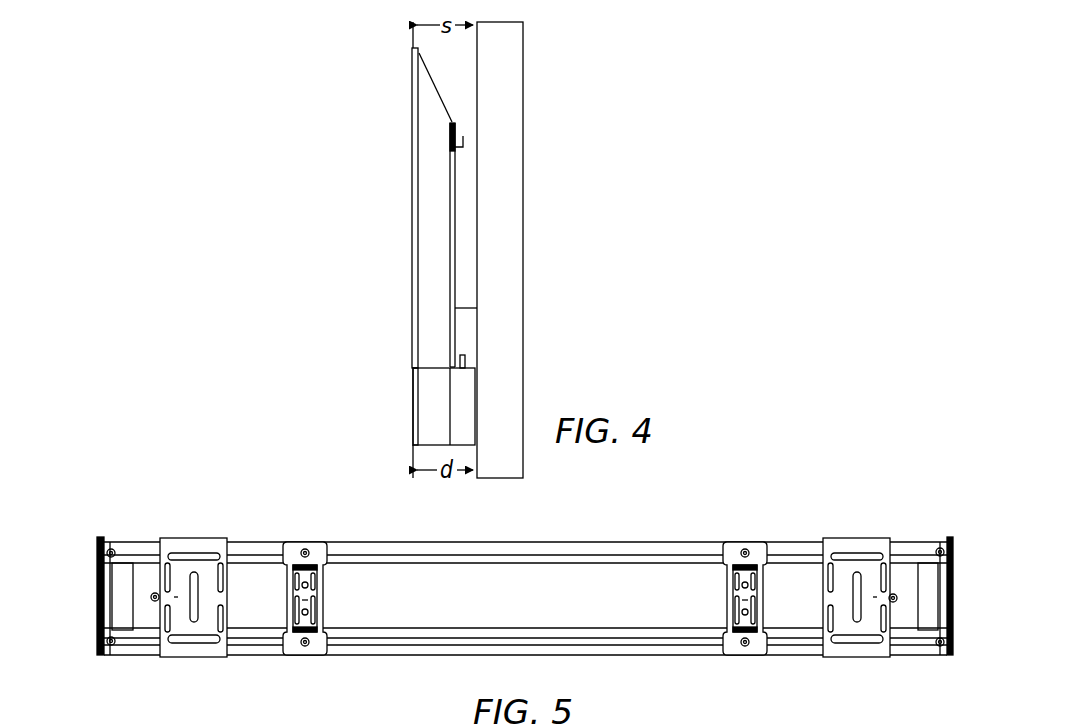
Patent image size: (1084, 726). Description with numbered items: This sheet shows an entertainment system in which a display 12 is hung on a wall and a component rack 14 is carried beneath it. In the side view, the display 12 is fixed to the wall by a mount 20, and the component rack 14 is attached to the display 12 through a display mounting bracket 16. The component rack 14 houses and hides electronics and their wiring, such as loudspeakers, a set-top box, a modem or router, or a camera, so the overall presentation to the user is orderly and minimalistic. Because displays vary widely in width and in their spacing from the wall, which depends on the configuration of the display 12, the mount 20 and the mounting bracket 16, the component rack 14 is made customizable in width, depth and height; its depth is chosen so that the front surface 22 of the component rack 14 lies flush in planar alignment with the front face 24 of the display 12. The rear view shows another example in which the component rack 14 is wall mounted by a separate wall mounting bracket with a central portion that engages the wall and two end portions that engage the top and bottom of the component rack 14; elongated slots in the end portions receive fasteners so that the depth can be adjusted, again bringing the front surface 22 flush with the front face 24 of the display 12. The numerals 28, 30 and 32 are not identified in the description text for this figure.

In FIG. 4, the display 12 is at (376, 208).
In FIG. 4, the component rack 14 is at (411, 383).
In FIG. 5, the component rack 14 is at (83, 578).
In FIG. 4, the display mounting bracket 16 is at (466, 332).
In FIG. 5, the display mounting bracket 16 is at (528, 580).
In FIG. 4, the mount 20 is at (463, 136).
In FIG. 4, the front surface of component rack 22 is at (412, 430).
In FIG. 4, the front face of display 24 is at (412, 180).
In FIG. 5, the fastener 28 is at (214, 597).
In FIG. 5, the mounting plate edge 30 is at (210, 532).
In FIG. 5, the connector 32 is at (858, 665).